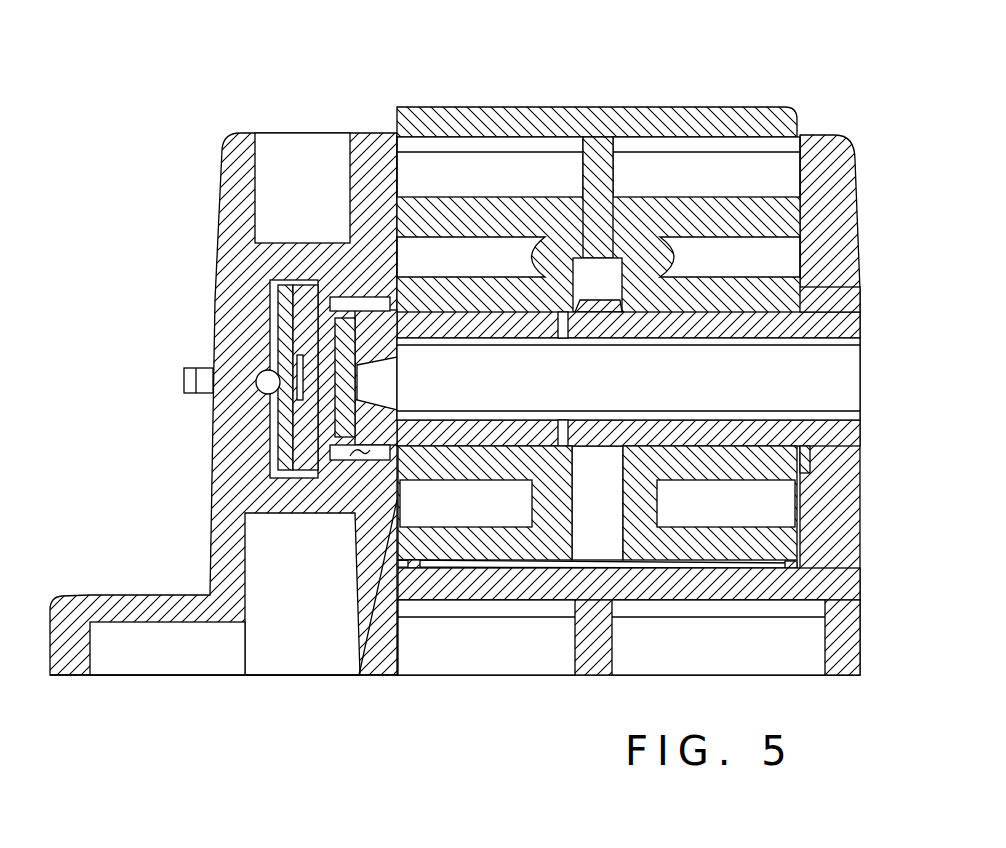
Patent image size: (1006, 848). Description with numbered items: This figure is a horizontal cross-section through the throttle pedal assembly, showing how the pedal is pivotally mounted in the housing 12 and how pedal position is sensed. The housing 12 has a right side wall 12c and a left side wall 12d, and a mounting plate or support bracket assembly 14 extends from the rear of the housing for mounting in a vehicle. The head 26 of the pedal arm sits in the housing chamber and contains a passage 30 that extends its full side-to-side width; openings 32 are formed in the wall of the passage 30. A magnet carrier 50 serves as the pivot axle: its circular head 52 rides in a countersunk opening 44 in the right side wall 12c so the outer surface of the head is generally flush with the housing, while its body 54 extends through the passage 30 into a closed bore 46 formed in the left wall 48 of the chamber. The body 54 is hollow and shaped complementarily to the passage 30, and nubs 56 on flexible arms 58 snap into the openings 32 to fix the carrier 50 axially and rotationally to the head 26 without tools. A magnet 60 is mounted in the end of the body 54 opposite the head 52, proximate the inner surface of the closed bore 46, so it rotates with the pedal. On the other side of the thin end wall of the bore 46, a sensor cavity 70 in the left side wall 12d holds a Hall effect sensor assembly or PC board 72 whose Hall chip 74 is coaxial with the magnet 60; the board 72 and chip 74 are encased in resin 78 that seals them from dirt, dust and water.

The housing 12 is at (509, 368).
The right side wall 12c is at (862, 528).
The left side wall 12d is at (216, 449).
The mounting plate or support bracket assembly 14 is at (80, 595).
The head 26 is at (668, 306).
The passage 30 is at (862, 292).
The opening or depression 32 is at (596, 258).
The opening 44 is at (862, 492).
The closed bore 46 is at (350, 462).
The left wall 48 is at (440, 568).
The magnet carrier 50 is at (660, 349).
The circular head 52 is at (862, 452).
The body 54 is at (375, 650).
The nubs 56 is at (600, 275).
The flexible arms 58 is at (742, 308).
The magnet 60 is at (347, 318).
The sensor cavity 70 is at (217, 391).
The Hall effect sensor assembly or PC board 72 is at (256, 405).
The Hall chip 74 is at (270, 352).
The resin 78 is at (232, 308).